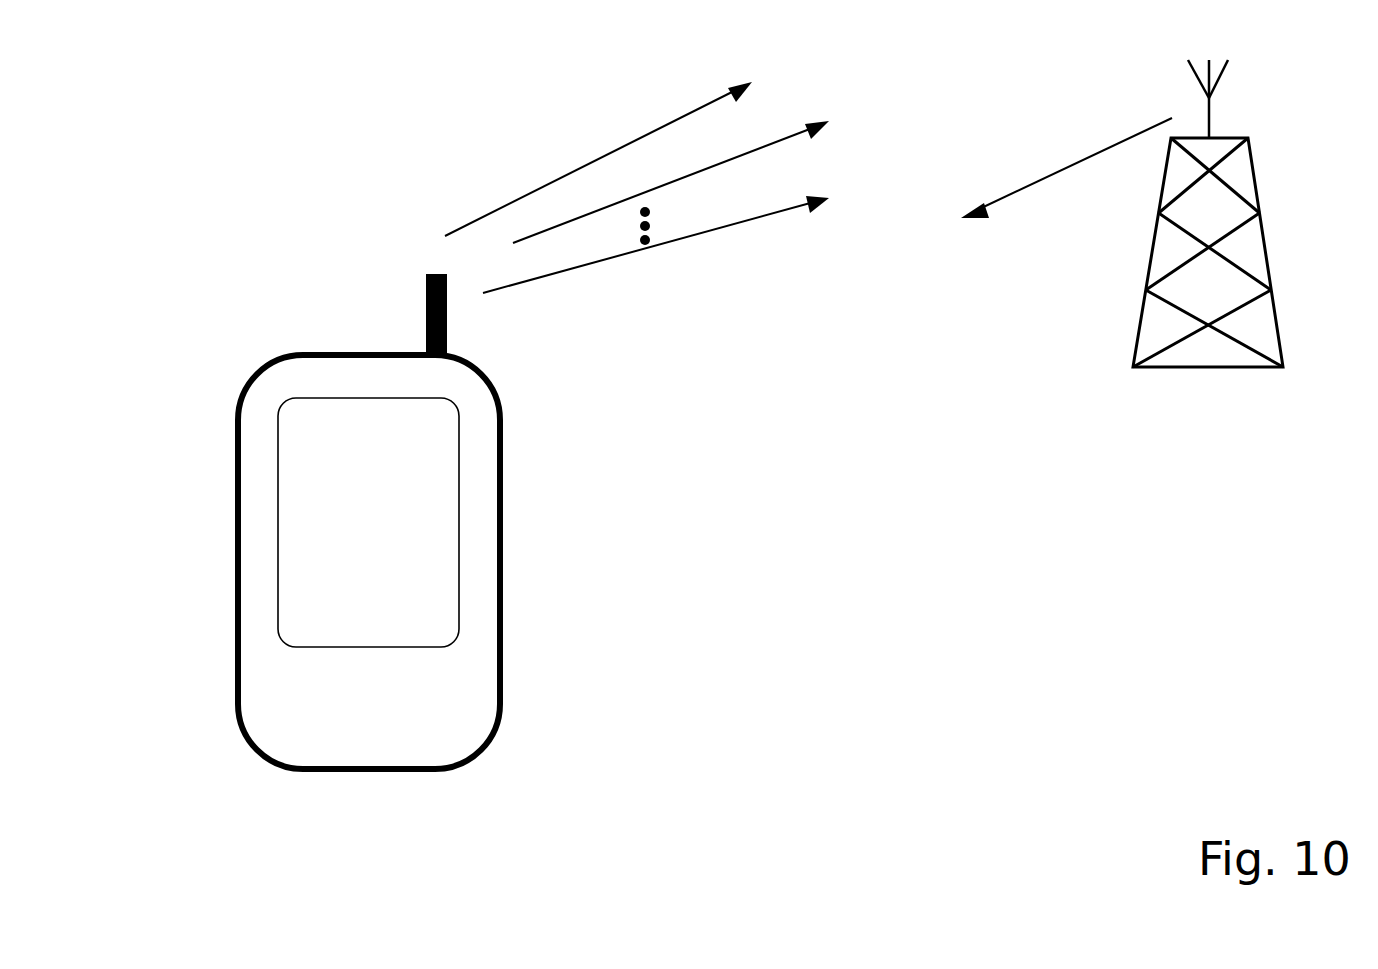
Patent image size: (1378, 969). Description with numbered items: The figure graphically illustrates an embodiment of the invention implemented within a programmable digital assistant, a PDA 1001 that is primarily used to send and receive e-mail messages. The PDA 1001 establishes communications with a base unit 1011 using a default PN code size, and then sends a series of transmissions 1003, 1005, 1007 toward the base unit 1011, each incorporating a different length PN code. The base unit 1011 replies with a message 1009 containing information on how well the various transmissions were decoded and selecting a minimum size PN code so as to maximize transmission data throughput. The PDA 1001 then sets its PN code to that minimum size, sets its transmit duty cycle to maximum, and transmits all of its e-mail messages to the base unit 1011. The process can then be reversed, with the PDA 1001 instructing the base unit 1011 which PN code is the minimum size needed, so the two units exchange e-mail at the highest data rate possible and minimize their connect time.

The PDA 1001 is at (503, 597).
The transmission 1003 is at (612, 152).
The transmission 1005 is at (688, 172).
The transmission 1007 is at (672, 238).
The message 1009 is at (1040, 180).
The base unit 1011 is at (1138, 336).